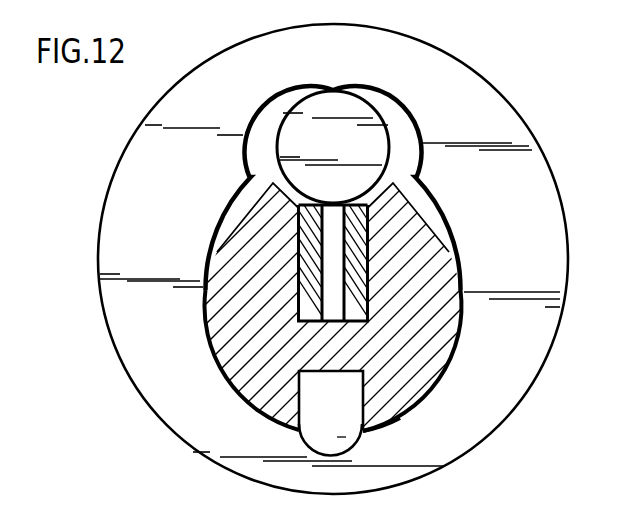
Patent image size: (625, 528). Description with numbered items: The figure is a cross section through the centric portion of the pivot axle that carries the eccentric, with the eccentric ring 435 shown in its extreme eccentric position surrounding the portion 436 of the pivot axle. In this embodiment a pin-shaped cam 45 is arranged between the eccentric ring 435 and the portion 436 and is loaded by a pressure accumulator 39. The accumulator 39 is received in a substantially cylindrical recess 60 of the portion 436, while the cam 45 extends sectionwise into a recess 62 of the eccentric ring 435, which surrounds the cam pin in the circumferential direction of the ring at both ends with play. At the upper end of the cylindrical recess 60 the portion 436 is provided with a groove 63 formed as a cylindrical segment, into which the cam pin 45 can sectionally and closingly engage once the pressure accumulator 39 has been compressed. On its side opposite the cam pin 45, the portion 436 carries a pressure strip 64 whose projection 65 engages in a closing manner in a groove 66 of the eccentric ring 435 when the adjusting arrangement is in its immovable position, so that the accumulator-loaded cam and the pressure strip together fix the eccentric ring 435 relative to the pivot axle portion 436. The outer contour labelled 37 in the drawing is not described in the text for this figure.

The eccentric ring 435 is at (474, 97).
The portion of the pivot axle 436 is at (390, 371).
The cylinder wall 37 is at (230, 200).
The recess of the eccentric ring 62 is at (284, 91).
The cam 45 is at (347, 107).
The groove 63 is at (372, 201).
The accumulator 39 is at (308, 246).
The cylindrical recess 60 is at (363, 259).
The pressure strip 64 is at (327, 399).
The projection 65 is at (363, 437).
The groove of the eccentric ring 66 is at (353, 447).